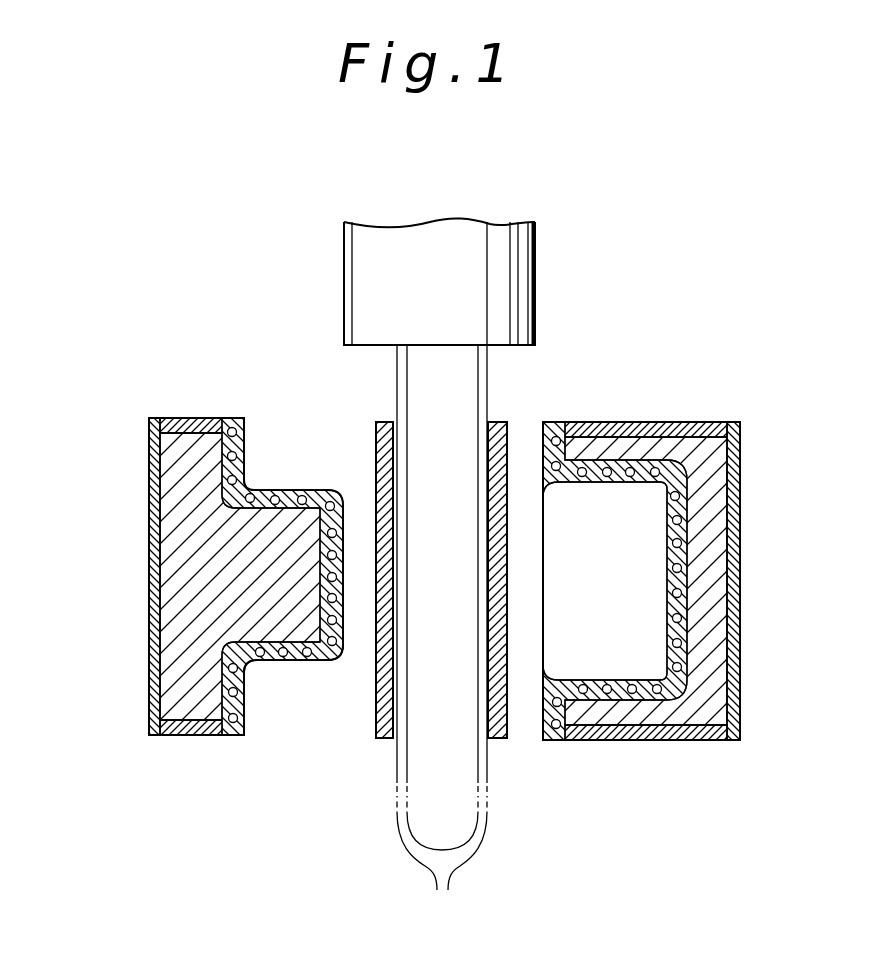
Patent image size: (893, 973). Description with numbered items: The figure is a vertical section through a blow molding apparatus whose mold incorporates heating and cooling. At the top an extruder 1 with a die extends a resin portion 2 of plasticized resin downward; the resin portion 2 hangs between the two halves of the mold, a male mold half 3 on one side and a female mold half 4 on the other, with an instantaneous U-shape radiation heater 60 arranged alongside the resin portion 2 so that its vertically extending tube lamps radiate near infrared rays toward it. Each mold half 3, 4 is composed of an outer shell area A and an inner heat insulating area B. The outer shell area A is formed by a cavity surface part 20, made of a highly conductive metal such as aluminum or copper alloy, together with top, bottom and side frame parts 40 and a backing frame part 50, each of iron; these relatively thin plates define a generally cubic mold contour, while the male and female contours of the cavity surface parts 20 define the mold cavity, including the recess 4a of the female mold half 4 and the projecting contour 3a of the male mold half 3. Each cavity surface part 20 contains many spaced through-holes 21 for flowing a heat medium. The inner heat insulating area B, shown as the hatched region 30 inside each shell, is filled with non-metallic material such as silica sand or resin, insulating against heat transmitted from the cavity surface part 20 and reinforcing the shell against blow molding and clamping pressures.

The extruder 1 is at (350, 282).
The resin portion 2 is at (478, 840).
The male mold half 3 is at (215, 740).
The stepped portion of left mold half 3a is at (272, 658).
The female mold half 4 is at (713, 746).
The cavity of right mold half 4a is at (665, 653).
The cavity surface part 20 is at (320, 660).
The through-holes 21 is at (228, 427).
The mold body 30 is at (173, 635).
The top, bottom and side frame parts 40 is at (190, 418).
The backing frame part 50 is at (157, 590).
The instantaneous U-shape radiation heater 60 is at (495, 420).
The outer shell area A is at (290, 495).
The inner heat insulating area B is at (177, 513).